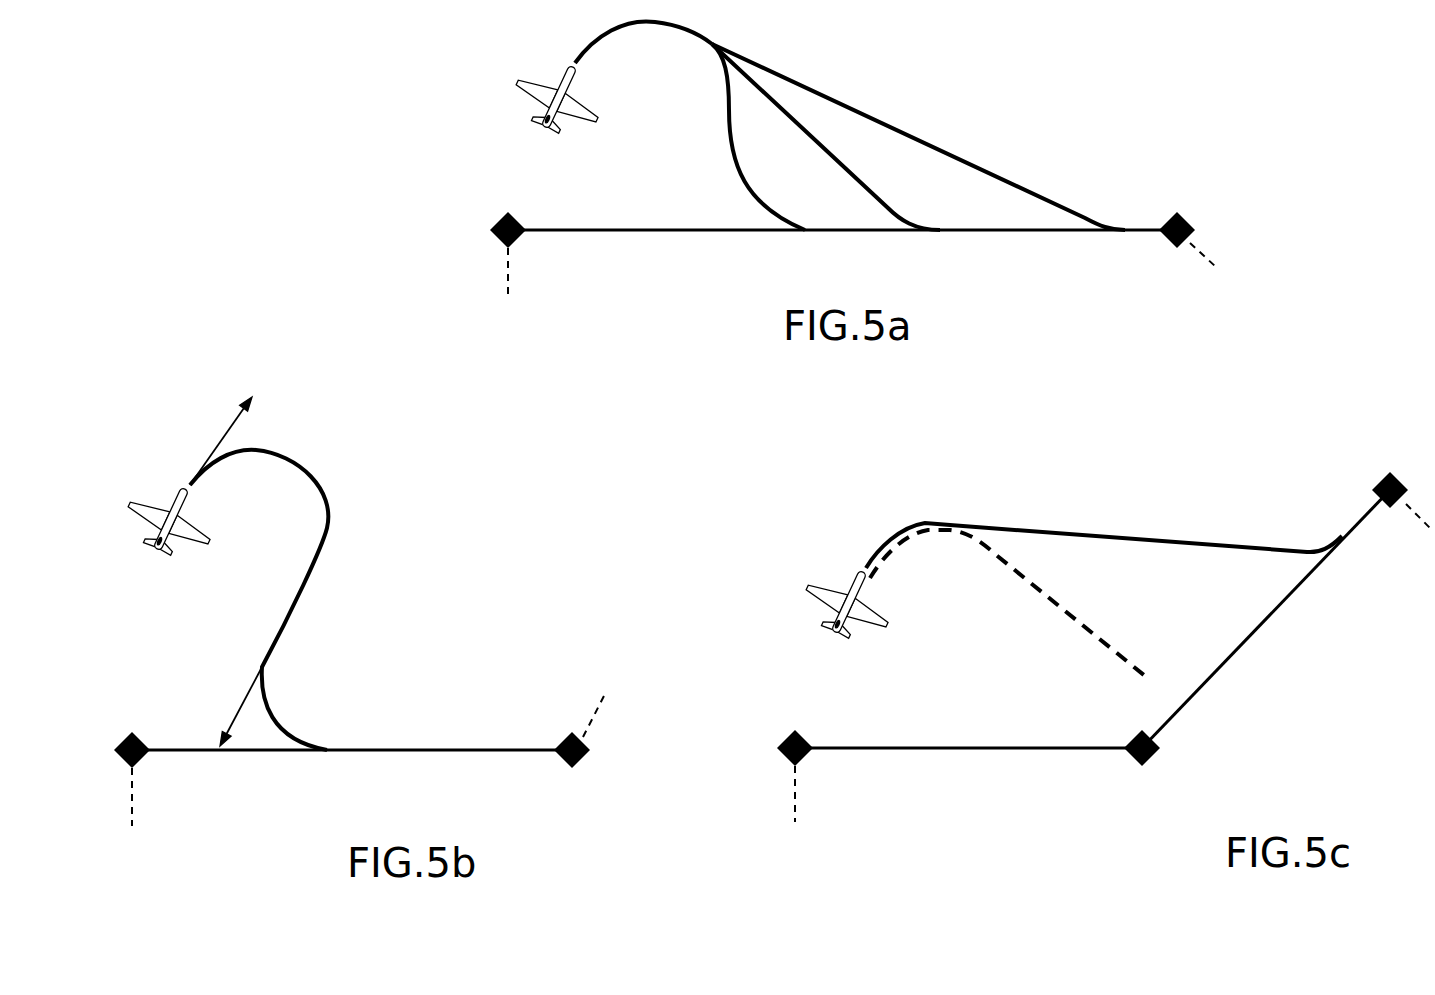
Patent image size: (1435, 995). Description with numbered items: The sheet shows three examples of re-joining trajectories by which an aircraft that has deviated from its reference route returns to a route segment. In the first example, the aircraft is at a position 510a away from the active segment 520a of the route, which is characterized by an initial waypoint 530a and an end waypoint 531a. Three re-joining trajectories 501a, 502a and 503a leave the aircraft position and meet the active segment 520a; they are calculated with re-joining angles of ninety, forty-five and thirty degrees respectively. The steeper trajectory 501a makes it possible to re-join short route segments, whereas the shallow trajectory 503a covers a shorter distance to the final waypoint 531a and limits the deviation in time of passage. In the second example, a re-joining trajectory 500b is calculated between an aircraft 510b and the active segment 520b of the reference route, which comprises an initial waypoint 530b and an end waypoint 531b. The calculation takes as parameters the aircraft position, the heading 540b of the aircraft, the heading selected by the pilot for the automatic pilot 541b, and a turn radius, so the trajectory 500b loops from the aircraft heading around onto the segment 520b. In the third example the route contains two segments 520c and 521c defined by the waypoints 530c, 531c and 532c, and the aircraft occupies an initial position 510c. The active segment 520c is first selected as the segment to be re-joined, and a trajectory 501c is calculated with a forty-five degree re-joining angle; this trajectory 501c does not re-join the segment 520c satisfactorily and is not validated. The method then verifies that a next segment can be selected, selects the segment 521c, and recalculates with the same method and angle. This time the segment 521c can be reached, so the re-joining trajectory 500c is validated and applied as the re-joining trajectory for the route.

In FIG. 5A, the position of the aircraft 510a is at (526, 82).
In FIG. 5A, the re-joining trajectory 501a is at (731, 146).
In FIG. 5A, the re-joining trajectory 502a is at (858, 174).
In FIG. 5A, the re-joining trajectory 503a is at (1000, 178).
In FIG. 5A, the active segment 520a is at (682, 232).
In FIG. 5A, the initial waypoint 530a is at (495, 233).
In FIG. 5A, the end waypoint 531a is at (1163, 241).
In FIG. 5B, the aircraft 510b is at (172, 500).
In FIG. 5B, the re-joining trajectory 500b is at (314, 574).
In FIG. 5B, the heading of the aircraft 540b is at (230, 428).
In FIG. 5B, the heading selected by the pilot for the automatic pilot 541b is at (240, 702).
In FIG. 5B, the active segment 520b is at (437, 755).
In FIG. 5B, the initial waypoint 530b is at (138, 760).
In FIG. 5B, the end waypoint 531b is at (562, 735).
In FIG. 5C, the initial position 510c is at (840, 588).
In FIG. 5C, the re-joining trajectory 500c is at (1118, 537).
In FIG. 5C, the trajectory 501c is at (1080, 618).
In FIG. 5C, the segment 521c is at (1223, 667).
In FIG. 5C, the segment 520c is at (980, 752).
In FIG. 5C, the waypoint 530c is at (803, 765).
In FIG. 5C, the waypoint 531c is at (1138, 762).
In FIG. 5C, the waypoint 532c is at (1387, 505).